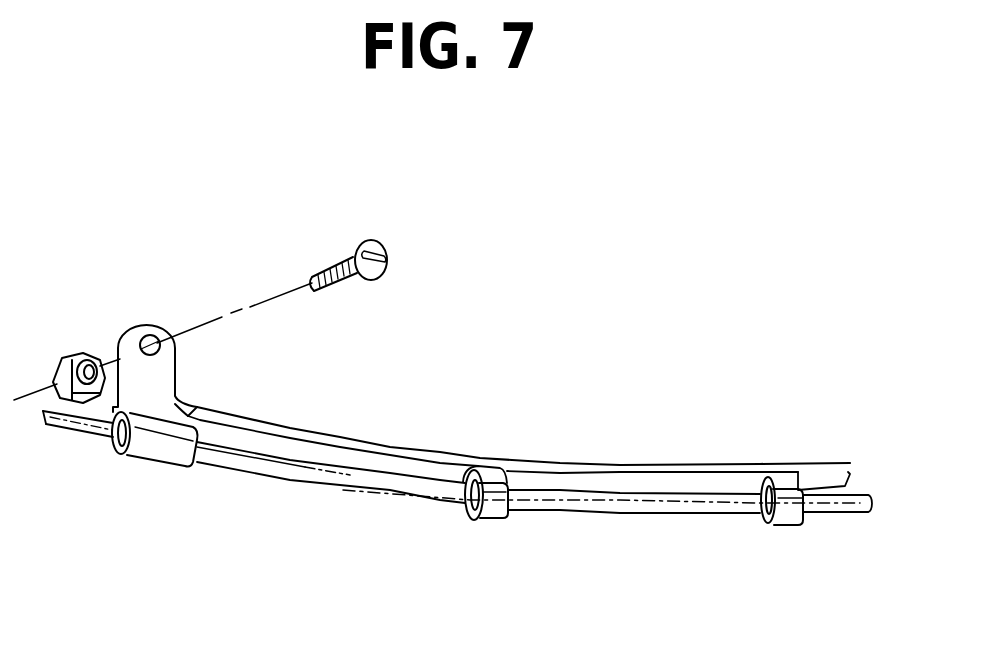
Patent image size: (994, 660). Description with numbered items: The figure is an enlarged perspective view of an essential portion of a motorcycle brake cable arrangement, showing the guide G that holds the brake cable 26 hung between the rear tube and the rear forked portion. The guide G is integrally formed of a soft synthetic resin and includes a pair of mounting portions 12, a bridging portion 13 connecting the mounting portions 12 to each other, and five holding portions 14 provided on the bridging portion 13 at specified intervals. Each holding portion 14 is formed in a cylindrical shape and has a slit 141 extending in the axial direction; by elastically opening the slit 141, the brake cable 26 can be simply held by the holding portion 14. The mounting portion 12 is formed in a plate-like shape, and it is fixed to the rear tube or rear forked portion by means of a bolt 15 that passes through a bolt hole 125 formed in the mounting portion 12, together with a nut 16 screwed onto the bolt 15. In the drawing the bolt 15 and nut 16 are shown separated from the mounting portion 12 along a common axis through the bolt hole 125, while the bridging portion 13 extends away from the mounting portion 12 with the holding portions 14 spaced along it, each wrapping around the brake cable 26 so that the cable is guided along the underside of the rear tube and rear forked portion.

The mounting portion 12 is at (186, 342).
The mounting hole 125 is at (163, 330).
The bridging portion 13 is at (345, 437).
The holding portion 14 is at (157, 470).
The slit 141 is at (200, 408).
The bolt 15 is at (334, 262).
The nut 16 is at (72, 352).
The brake cable 26 is at (308, 480).
The guide G is at (519, 409).